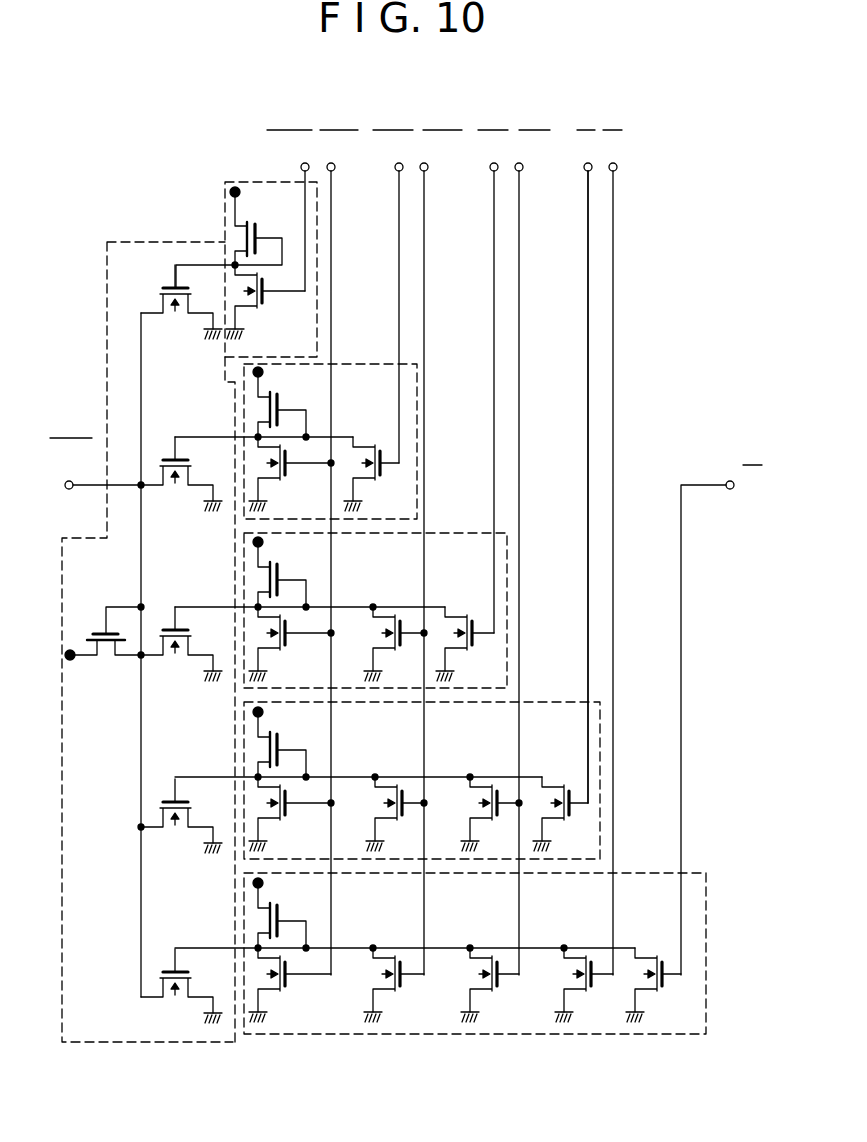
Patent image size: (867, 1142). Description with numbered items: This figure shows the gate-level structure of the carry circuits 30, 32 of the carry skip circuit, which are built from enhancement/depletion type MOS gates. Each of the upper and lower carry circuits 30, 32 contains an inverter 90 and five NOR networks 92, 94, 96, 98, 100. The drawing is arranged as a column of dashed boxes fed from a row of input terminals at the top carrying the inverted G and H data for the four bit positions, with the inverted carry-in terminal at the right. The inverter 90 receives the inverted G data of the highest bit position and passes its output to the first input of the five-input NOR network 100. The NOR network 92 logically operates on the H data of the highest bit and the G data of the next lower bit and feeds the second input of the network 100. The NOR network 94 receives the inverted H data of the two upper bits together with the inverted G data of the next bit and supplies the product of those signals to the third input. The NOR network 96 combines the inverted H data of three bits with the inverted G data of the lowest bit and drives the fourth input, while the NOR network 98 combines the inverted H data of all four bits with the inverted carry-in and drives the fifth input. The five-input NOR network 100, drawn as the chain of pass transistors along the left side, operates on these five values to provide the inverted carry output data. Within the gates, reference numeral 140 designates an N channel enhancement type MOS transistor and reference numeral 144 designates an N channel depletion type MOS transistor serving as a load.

The upper carry circuit 30 is at (630, 350).
The lower carry circuit 32 is at (661, 487).
The inverter 90 is at (244, 181).
The NOR network 92 is at (370, 363).
The NOR network 94 is at (341, 582).
The NOR network 96 is at (546, 702).
The NOR network 98 is at (707, 935).
The 5-input NOR network 100 is at (148, 615).
The N channel enhancement type MOS transistor 140 is at (169, 480).
The N channel depletion type MOS transistor 144 is at (278, 577).